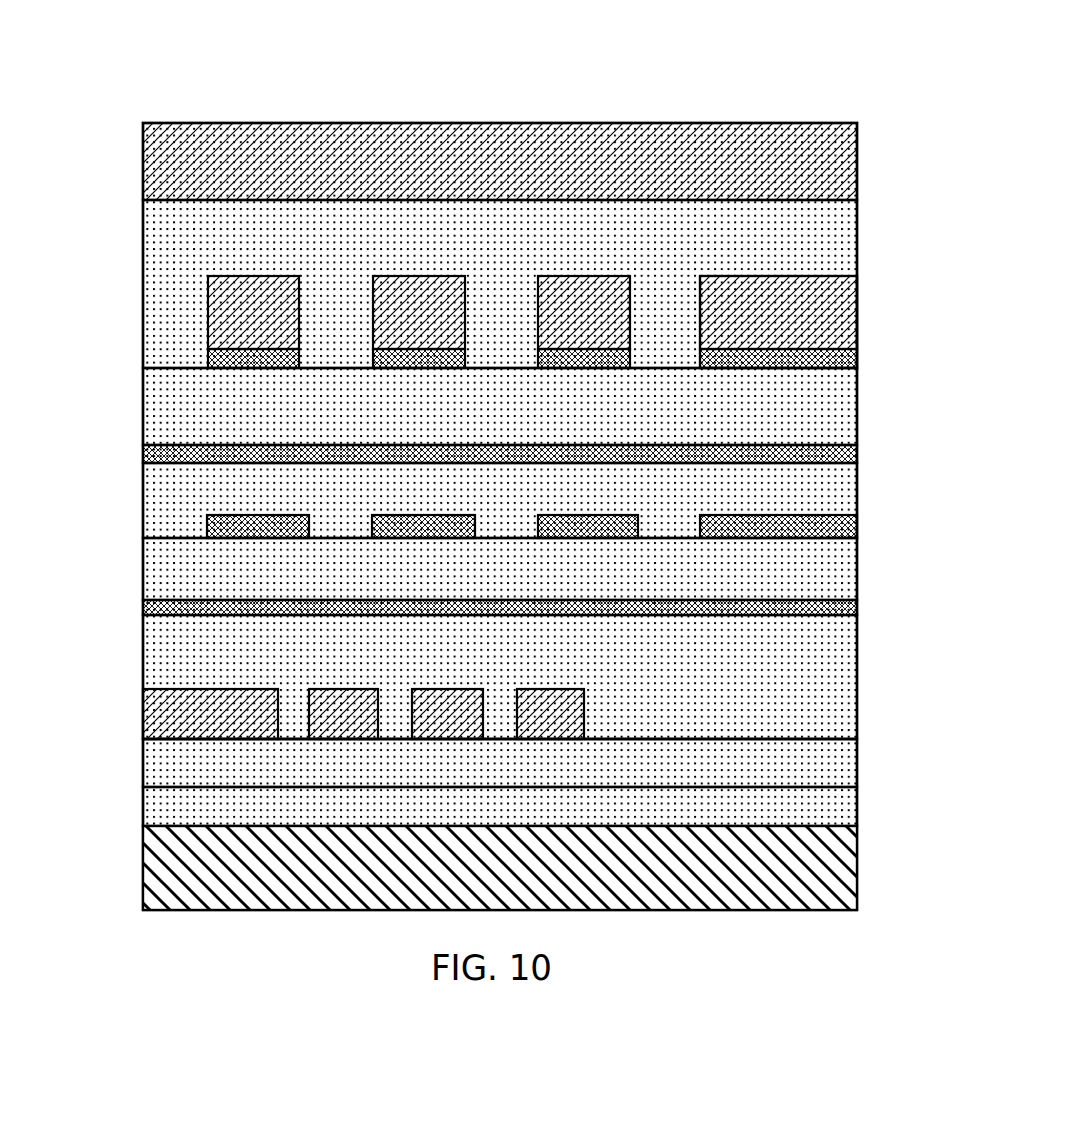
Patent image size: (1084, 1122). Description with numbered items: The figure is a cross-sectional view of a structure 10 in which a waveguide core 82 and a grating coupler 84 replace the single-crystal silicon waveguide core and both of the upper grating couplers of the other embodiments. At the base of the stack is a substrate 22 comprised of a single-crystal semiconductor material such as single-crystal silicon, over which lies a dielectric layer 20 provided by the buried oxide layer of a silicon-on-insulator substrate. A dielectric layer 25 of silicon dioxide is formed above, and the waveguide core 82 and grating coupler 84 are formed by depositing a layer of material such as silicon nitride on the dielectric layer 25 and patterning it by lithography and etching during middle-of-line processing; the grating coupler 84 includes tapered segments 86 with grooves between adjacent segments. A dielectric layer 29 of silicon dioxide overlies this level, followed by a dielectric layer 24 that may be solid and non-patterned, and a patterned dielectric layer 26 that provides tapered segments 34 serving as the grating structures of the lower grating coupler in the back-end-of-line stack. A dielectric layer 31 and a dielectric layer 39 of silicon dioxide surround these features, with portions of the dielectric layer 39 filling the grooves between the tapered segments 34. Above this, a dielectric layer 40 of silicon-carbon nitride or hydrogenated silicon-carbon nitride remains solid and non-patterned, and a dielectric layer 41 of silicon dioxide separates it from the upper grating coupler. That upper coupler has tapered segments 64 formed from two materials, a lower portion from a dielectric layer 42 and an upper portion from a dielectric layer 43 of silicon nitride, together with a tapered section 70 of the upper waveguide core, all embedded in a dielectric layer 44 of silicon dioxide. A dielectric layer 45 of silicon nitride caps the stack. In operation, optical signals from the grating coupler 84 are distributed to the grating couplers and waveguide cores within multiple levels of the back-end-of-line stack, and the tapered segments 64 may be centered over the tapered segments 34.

The structure 10 is at (150, 84).
The dielectric layer 45 is at (815, 176).
The dielectric layer 44 is at (175, 230).
The dielectric layer 43 is at (872, 296).
The tapered segments 64 is at (255, 312).
The tapered section 70 is at (730, 330).
The dielectric layer 42 is at (190, 357).
The dielectric layer 41 is at (820, 405).
The dielectric layer 40 is at (185, 455).
The dielectric layer 39 is at (830, 487).
The tapered segments 34 is at (240, 527).
The patterned dielectric layer 26 is at (875, 520).
The dielectric layer 31 is at (830, 567).
The dielectric layer 24 is at (185, 608).
The dielectric layer 29 is at (830, 660).
The waveguide core 82 is at (188, 707).
The grating coupler 84 is at (605, 715).
The tapered segments 86 is at (335, 728).
The dielectric layer 25 is at (820, 758).
The dielectric layer 20 is at (820, 808).
The substrate 22 is at (830, 880).